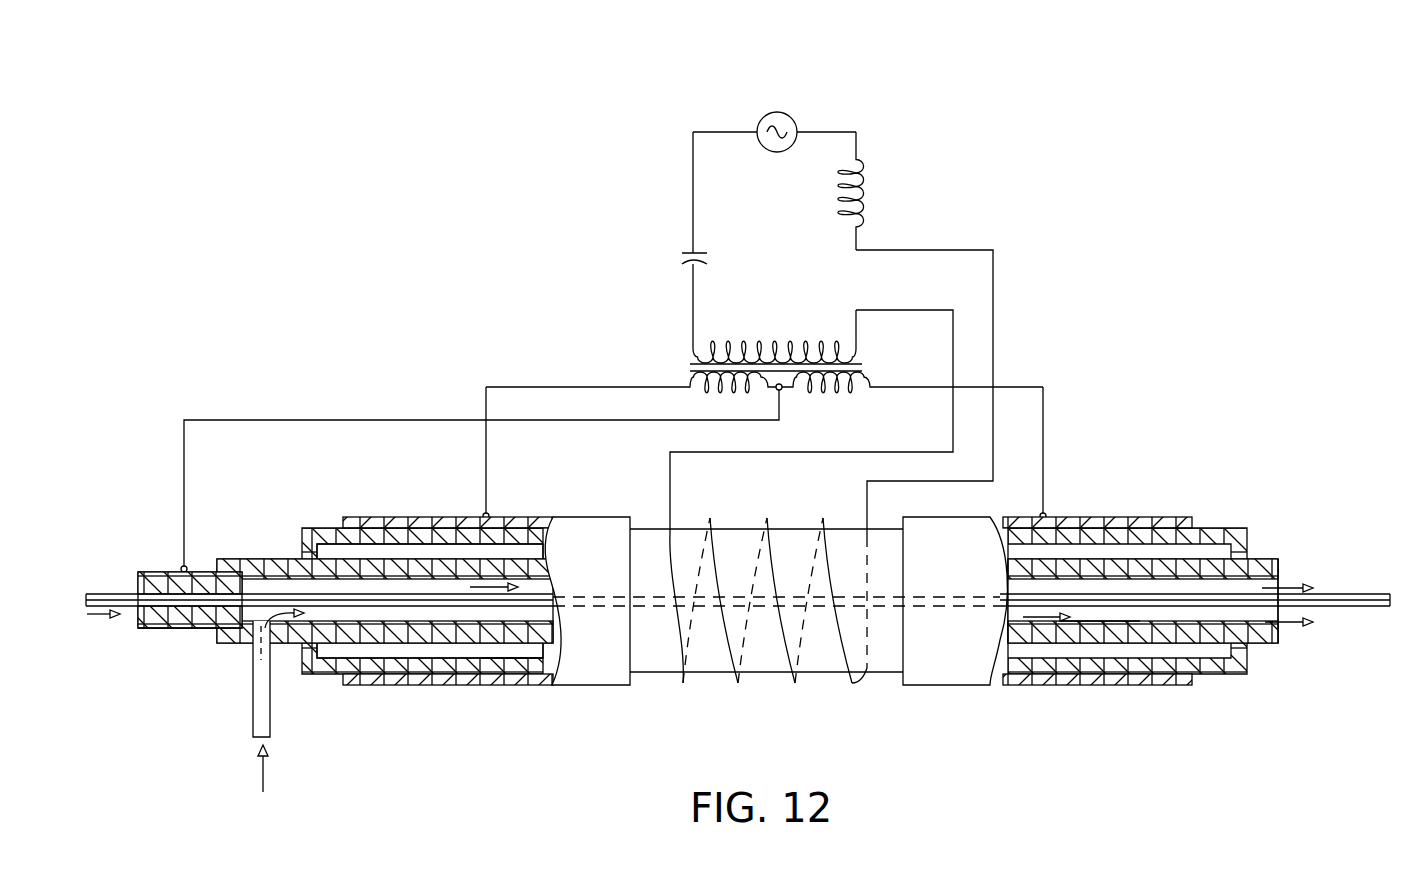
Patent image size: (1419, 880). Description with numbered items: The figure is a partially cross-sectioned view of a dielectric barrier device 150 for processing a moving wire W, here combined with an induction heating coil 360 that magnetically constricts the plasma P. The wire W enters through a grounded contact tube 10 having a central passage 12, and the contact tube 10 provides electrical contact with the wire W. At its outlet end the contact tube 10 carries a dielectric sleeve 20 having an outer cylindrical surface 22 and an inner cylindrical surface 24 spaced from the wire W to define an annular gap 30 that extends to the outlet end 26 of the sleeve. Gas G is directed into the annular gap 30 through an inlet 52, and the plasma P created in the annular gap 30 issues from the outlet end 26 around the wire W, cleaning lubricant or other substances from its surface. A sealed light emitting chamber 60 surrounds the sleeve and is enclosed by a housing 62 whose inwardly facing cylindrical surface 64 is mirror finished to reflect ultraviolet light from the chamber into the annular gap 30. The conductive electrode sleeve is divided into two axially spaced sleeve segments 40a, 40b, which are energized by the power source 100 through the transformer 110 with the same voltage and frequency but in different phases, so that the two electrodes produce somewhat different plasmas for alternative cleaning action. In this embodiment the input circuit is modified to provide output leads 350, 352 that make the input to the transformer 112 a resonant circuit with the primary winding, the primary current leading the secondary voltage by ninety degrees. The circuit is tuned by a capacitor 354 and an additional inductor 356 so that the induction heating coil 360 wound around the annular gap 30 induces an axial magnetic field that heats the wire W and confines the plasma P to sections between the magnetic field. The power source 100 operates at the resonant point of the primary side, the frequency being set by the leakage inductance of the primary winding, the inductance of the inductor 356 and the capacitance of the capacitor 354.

The grounded contact tube 10 is at (154, 562).
The central passage 12 is at (172, 628).
The dielectric sleeve 20 is at (259, 552).
The outer cylindrical surface 22 is at (1210, 648).
The inner cylindrical surface 24 is at (1100, 625).
The outlet end 26 is at (1280, 637).
The annular gap 30 is at (1145, 616).
The sleeve segment 40a is at (522, 521).
The sleeve segment 40b is at (1077, 522).
The inlet 52 is at (252, 708).
The light emitting chamber 60 is at (437, 652).
The housing 62 is at (321, 524).
The inwardly facing cylindrical surface 64 is at (500, 652).
The power source 100 is at (757, 118).
The transformer 110 is at (676, 359).
The transformer 112 is at (744, 348).
The dielectric barrier device 150 is at (1190, 462).
The output lead 350 is at (937, 310).
The output lead 352 is at (960, 250).
The capacitor 354 is at (680, 255).
The inductor 356 is at (868, 197).
The induction heating coil 360 is at (795, 684).
The gas G is at (262, 766).
The plasma P is at (1287, 588).
The wire W is at (1357, 602).